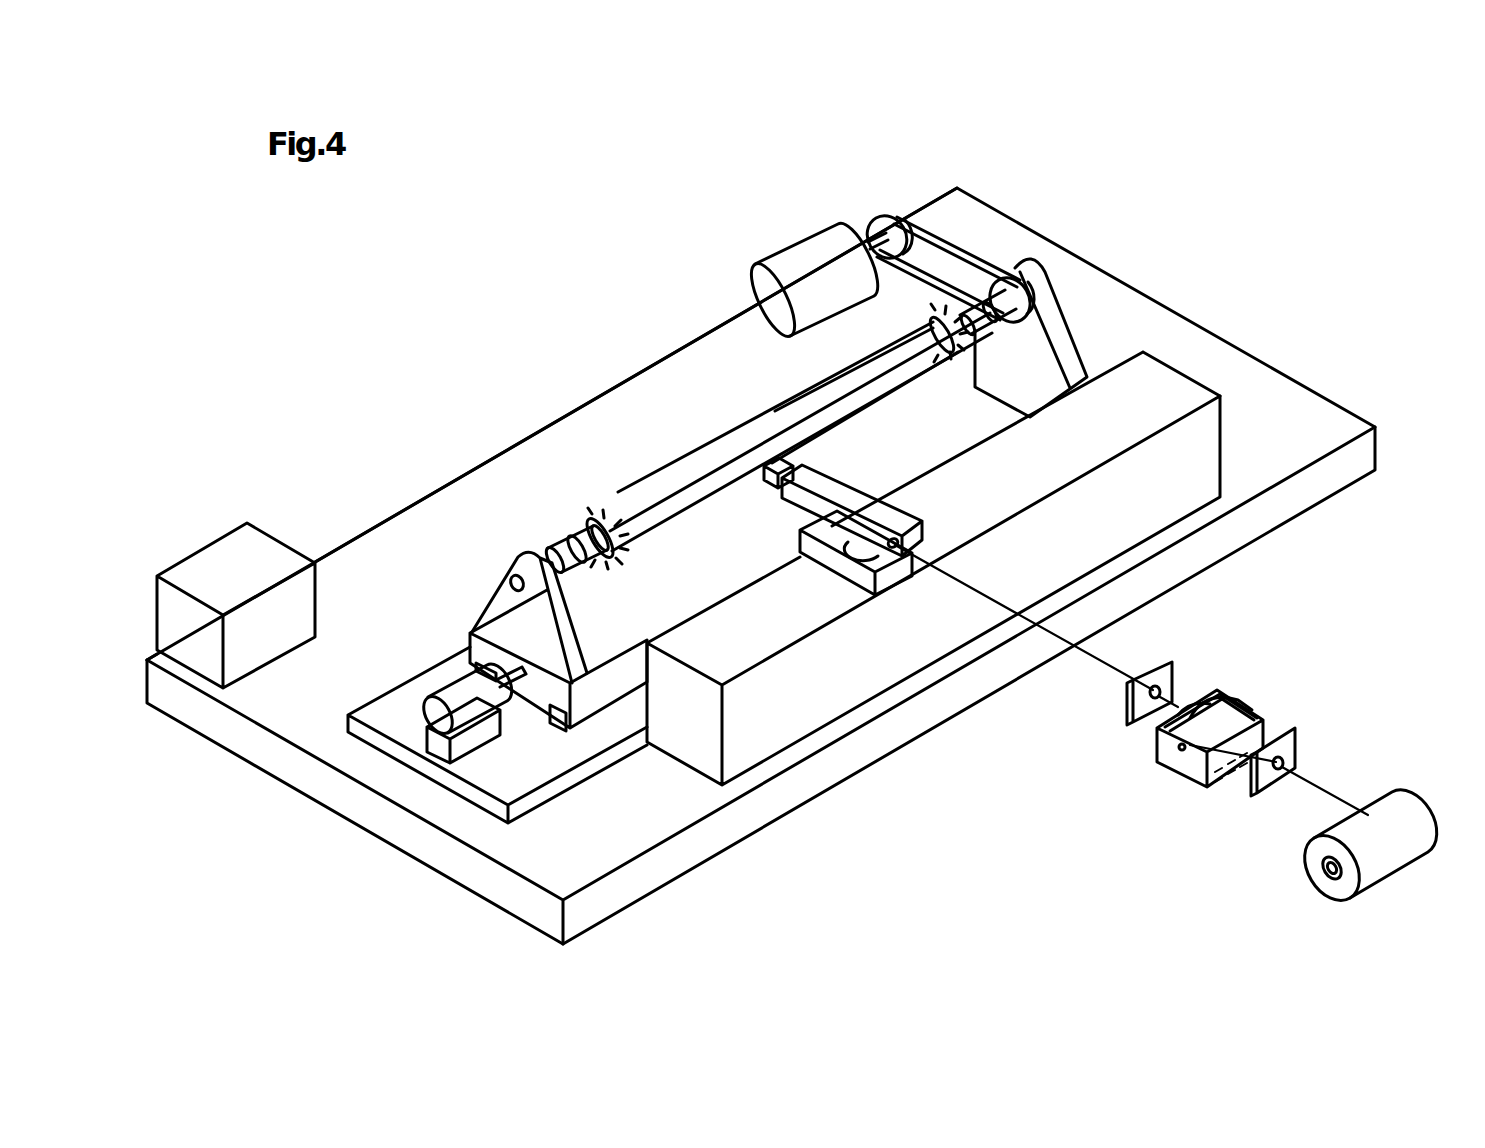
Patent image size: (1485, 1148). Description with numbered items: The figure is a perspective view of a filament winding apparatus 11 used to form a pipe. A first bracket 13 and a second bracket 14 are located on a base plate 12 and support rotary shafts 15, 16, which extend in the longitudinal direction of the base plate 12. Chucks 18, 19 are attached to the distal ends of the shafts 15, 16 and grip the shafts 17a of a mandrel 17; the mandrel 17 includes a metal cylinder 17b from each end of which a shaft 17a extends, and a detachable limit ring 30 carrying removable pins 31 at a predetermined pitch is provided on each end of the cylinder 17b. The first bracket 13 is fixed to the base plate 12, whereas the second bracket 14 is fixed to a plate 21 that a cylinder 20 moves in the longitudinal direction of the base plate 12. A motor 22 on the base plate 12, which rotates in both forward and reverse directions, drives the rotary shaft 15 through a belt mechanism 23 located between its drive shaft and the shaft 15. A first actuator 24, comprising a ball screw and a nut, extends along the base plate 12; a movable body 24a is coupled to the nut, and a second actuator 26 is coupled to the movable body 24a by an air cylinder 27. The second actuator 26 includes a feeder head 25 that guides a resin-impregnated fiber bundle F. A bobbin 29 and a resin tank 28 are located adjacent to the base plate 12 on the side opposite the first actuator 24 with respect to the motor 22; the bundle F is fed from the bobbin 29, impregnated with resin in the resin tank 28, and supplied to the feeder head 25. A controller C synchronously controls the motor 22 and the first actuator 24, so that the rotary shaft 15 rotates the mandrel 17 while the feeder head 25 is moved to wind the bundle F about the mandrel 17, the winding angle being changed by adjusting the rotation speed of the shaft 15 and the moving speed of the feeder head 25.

The filament winding apparatus 11 is at (1239, 291).
The base plate 12 is at (735, 828).
The first bracket 13 is at (1058, 318).
The second bracket 14 is at (498, 592).
The rotary shaft 15 is at (1010, 322).
The rotary shaft 16 is at (562, 578).
The mandrel 17 is at (668, 445).
The shaft 17a is at (610, 560).
The metal cylinder 17b is at (865, 415).
The chuck 18 is at (988, 330).
The chuck 19 is at (572, 548).
The cylinder 20 is at (447, 698).
The plate 21 is at (710, 536).
The motor 22 is at (780, 254).
The belt mechanism 23 is at (942, 216).
The first actuator 24 is at (1208, 443).
The movable body 24a is at (855, 575).
The feeder head 25 is at (790, 468).
The second actuator 26 is at (884, 517).
The air cylinder 27 is at (843, 553).
The resin tank 28 is at (1190, 772).
The bobbin 29 is at (1318, 852).
The limit ring 30 is at (605, 510).
The removable pins 31 is at (596, 508).
The controller C is at (214, 548).
The fiber bundle F is at (805, 388).